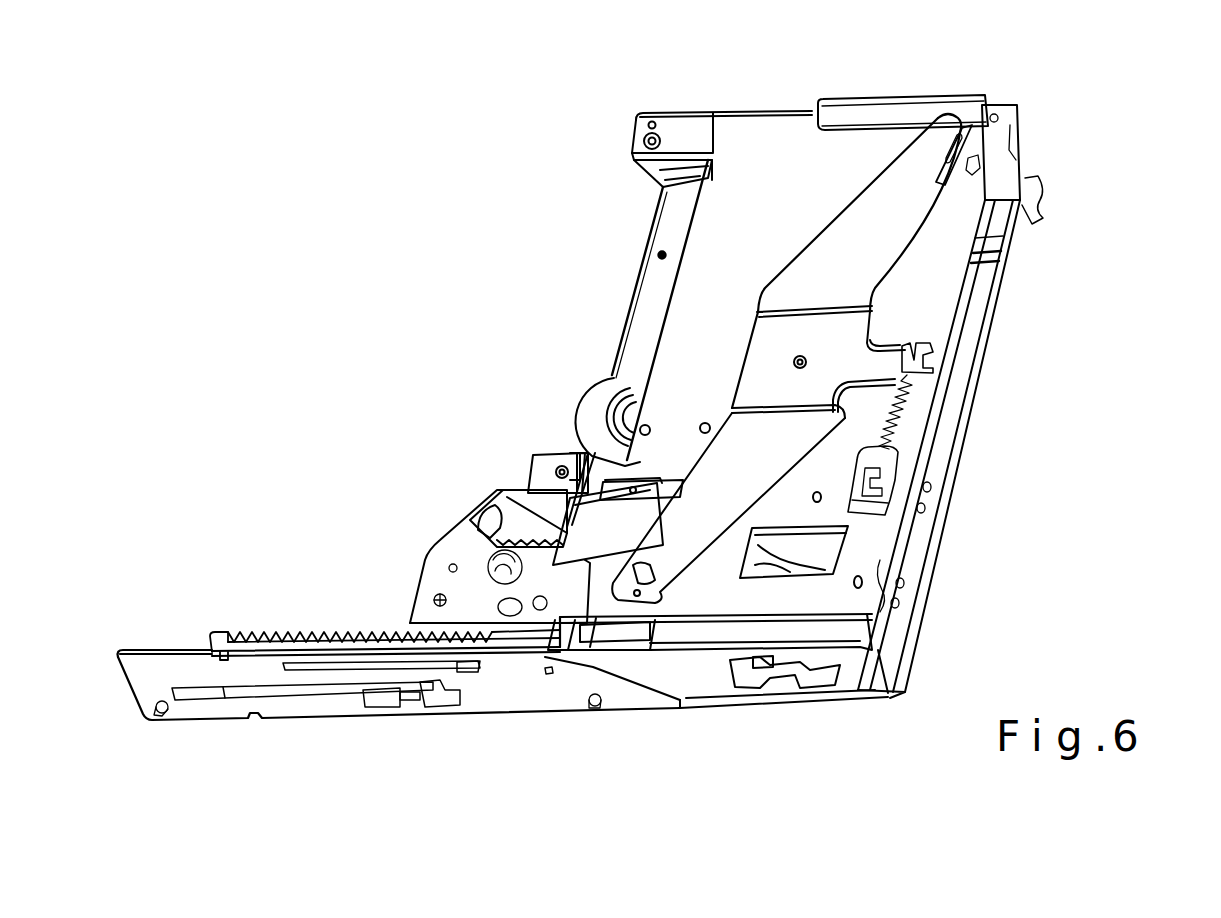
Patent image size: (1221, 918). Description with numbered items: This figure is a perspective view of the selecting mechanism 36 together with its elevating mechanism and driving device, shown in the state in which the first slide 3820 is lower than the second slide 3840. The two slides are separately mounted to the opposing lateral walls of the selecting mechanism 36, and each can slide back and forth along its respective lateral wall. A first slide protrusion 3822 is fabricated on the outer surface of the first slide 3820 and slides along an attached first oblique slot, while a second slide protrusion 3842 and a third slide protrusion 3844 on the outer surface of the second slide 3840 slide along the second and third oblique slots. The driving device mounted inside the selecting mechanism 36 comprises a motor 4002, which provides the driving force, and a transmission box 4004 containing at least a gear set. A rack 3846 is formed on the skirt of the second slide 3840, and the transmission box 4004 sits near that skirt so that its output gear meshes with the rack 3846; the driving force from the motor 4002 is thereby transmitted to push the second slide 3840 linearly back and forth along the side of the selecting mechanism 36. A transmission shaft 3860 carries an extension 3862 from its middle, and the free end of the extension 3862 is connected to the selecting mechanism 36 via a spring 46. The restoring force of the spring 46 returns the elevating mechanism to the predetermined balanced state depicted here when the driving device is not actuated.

The selecting mechanism 36 is at (930, 560).
The spring 46 is at (915, 415).
The first slide 3820 is at (873, 108).
The first slide protrusion 3822 is at (952, 101).
The second slide 3840 is at (520, 697).
The second slide protrusion 3842 is at (586, 712).
The third slide protrusion 3844 is at (150, 722).
The rack 3846 is at (282, 632).
The transmission shaft 3860 is at (900, 215).
The extension 3862 is at (877, 360).
The motor 4002 is at (587, 541).
The transmission box 4004 is at (443, 584).